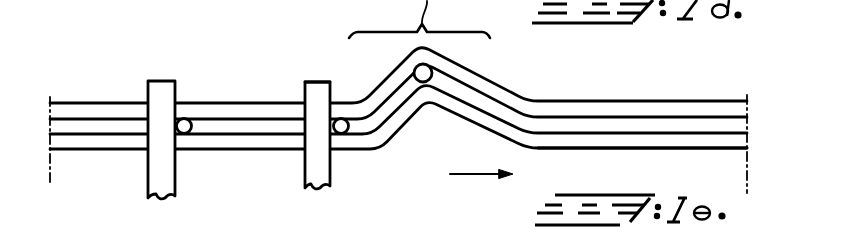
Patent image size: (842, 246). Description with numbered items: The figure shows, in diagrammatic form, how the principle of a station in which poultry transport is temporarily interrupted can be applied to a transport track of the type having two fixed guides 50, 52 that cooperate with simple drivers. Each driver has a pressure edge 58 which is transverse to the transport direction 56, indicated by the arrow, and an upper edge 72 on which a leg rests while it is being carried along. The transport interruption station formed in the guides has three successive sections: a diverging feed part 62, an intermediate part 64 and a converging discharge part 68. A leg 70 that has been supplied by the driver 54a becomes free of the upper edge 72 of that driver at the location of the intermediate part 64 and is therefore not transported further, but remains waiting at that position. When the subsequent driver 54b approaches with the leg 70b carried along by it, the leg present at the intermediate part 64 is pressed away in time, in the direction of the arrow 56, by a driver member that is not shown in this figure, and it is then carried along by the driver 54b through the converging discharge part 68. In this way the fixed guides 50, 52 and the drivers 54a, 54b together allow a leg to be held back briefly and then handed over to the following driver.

The fixed guide 50 is at (655, 110).
The fixed guide 52 is at (605, 143).
The driver 54a is at (328, 175).
The subsequent driver 54b is at (157, 170).
The transport direction 56 is at (468, 176).
The pressure edge 58 is at (331, 161).
The diverging feed part 62 is at (385, 107).
The intermediate part 64 is at (430, 73).
The converging discharge part 68 is at (489, 108).
The leg 70 is at (341, 118).
The leg 70b is at (184, 118).
The upper edge 72 is at (317, 80).